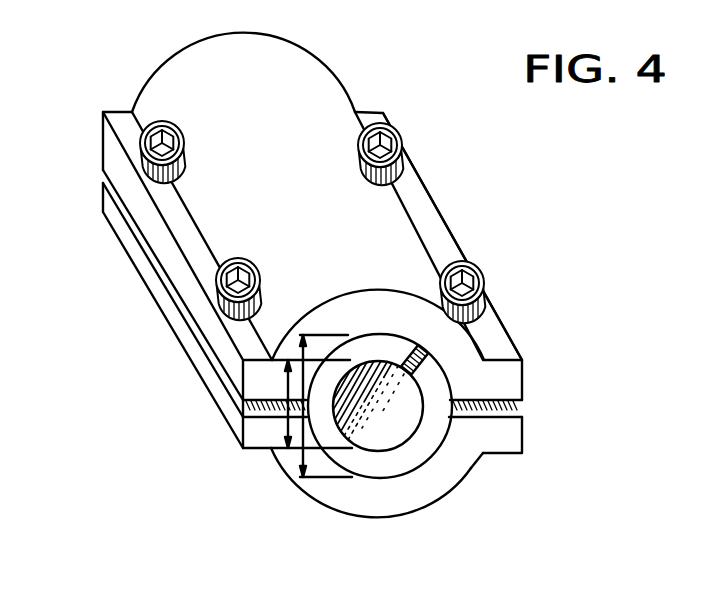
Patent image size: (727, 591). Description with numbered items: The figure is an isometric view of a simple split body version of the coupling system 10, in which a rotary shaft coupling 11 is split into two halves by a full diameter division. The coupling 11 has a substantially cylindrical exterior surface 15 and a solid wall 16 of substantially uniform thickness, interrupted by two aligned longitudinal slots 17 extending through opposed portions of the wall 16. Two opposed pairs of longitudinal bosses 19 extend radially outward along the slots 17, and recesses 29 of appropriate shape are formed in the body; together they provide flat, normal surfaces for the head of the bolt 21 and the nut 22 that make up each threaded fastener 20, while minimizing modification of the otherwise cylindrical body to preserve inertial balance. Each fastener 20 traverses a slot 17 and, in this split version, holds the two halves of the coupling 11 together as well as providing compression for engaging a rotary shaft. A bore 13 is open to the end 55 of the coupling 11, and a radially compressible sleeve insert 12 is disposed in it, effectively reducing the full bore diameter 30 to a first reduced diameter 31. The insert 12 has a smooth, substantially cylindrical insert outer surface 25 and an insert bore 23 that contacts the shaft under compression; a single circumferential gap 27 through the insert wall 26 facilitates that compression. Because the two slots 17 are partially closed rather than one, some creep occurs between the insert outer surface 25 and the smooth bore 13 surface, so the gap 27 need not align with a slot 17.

The coupling system 10 is at (581, 513).
The coupling 11 is at (145, 307).
The sleeve insert 12 is at (363, 466).
The bore 13 is at (393, 480).
The exterior surface 15 is at (304, 87).
The wall 16 is at (328, 490).
The longitudinal slot 17 is at (95, 160).
The bosses 19 is at (110, 138).
The threaded fastener 20 is at (468, 175).
The bolt 21 is at (400, 134).
The nut 22 is at (458, 218).
The insert bore 23 is at (397, 427).
The insert outer surface 25 is at (472, 473).
The insert wall 26 is at (444, 478).
The circumferential gap 27 is at (410, 343).
The recesses 29 is at (216, 186).
The full bore diameter 30 is at (307, 323).
The first reduced diameter 31 is at (280, 440).
The end 55 is at (165, 53).